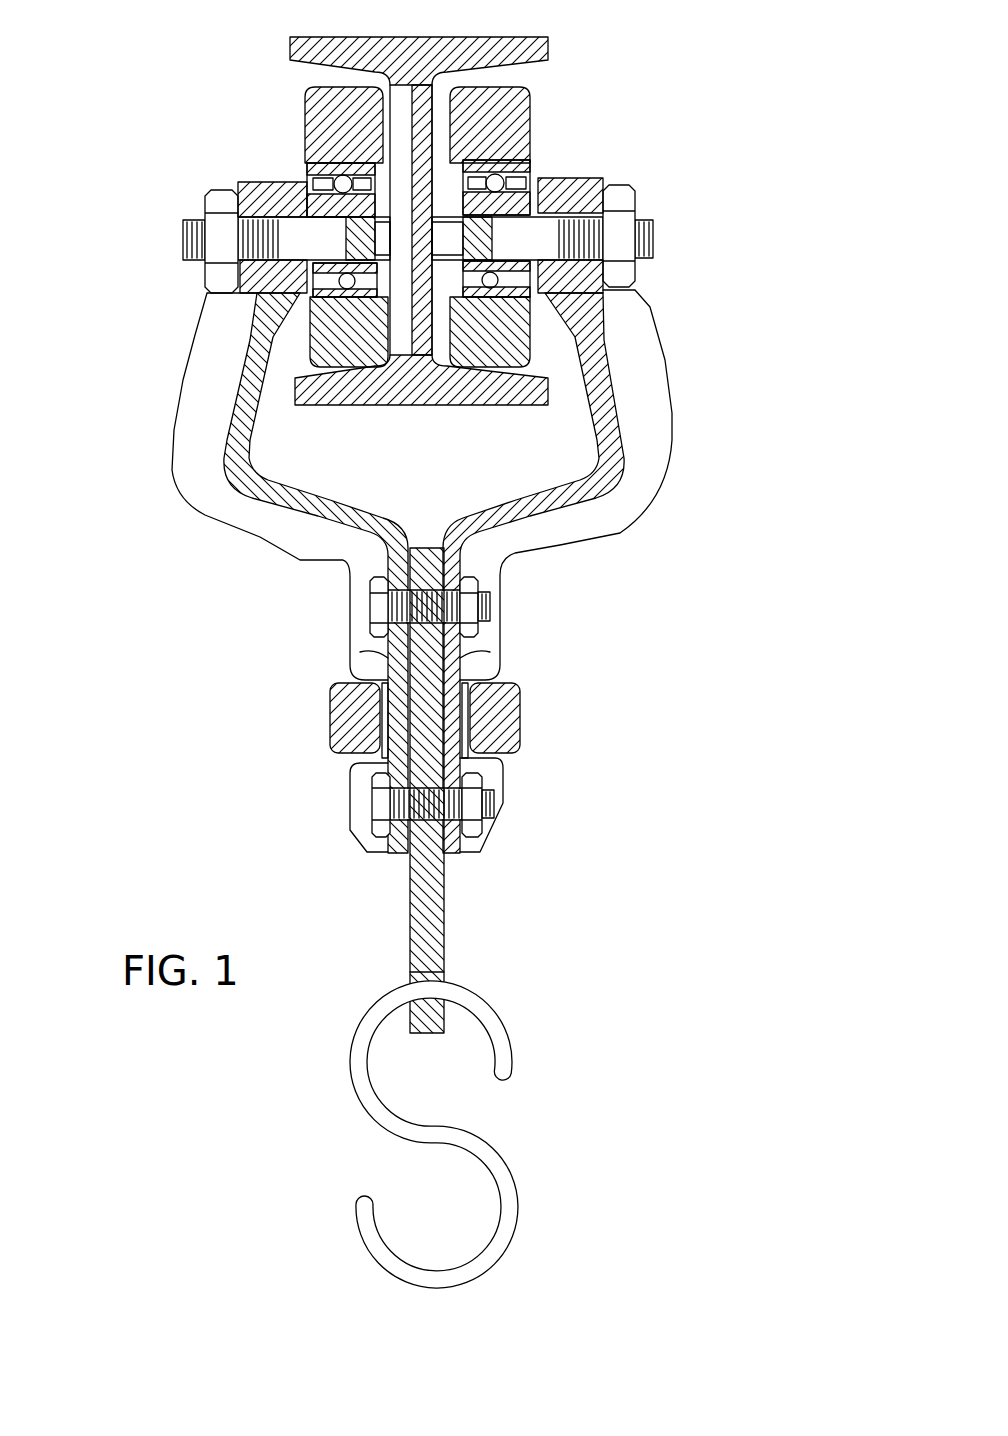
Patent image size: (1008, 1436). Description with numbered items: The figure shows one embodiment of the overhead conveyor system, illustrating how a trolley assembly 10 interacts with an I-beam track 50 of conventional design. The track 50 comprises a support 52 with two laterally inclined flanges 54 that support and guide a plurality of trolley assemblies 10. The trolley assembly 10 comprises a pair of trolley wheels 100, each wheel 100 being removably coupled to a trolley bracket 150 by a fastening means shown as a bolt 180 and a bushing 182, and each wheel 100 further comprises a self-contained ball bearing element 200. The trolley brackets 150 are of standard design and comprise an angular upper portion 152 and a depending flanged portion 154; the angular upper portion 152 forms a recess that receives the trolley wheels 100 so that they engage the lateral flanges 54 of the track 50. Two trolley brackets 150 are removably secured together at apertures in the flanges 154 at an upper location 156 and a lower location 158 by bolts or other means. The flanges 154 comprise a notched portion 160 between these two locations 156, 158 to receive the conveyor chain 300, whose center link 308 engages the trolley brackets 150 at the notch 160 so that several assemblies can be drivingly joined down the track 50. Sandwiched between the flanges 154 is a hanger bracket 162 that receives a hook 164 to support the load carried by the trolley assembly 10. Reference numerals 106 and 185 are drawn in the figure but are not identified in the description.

The trolley assembly 10 is at (765, 582).
The I-beam track 50 is at (428, 415).
The support 52 is at (417, 123).
The laterally inclined flanges 54 is at (357, 395).
The rail top flange 106 is at (338, 80).
The trolley wheel 100 is at (297, 105).
The self-contained ball bearing element 200 is at (335, 155).
The bushing 182 is at (293, 163).
The bolt 180 is at (183, 242).
The frame upper pad 185 is at (257, 320).
The angular upper portion 152 is at (212, 347).
The trolley bracket 150 is at (163, 436).
The depending flanged portion 154 is at (377, 655).
The bolt 156 is at (377, 605).
The bolt 158 is at (377, 807).
The notched portion 160 is at (353, 760).
The hanger bracket 162 is at (413, 902).
The hook 164 is at (338, 1223).
The conveyor chain 300 is at (315, 705).
The center link 308 is at (520, 725).